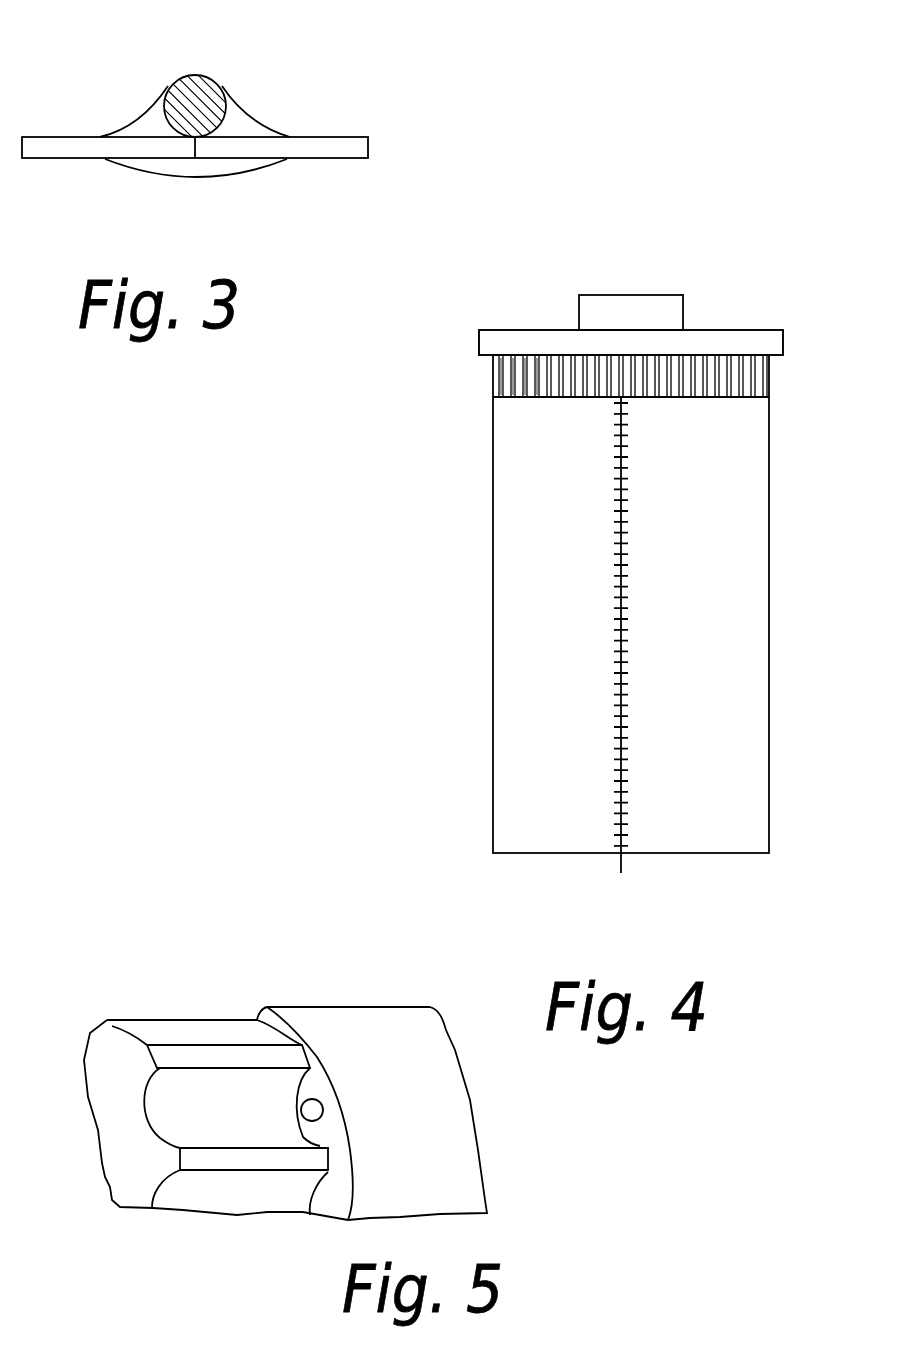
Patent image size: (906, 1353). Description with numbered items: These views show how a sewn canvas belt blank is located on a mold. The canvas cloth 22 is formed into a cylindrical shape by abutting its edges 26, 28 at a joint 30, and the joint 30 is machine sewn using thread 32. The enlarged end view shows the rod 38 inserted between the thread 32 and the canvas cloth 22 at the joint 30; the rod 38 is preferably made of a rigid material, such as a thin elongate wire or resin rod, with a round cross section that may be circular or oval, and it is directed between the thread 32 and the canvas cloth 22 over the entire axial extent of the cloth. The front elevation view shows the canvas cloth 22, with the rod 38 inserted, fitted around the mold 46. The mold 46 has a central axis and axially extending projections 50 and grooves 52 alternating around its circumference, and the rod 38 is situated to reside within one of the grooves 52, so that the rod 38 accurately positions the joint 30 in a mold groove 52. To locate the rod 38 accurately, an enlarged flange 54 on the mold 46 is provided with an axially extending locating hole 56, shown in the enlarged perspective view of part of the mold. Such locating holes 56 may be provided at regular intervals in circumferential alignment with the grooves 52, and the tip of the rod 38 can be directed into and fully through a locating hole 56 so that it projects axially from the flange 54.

In FIG. 3, the canvas cloth 22 is at (353, 145).
In FIG. 4, the canvas cloth 22 is at (757, 534).
In FIG. 3, the edge 26 is at (150, 160).
In FIG. 3, the edge 28 is at (155, 156).
In FIG. 3, the joint 30 is at (213, 160).
In FIG. 4, the joint 30 is at (618, 855).
In FIG. 3, the thread 32 is at (140, 107).
In FIG. 4, the thread 32 is at (627, 457).
In FIG. 3, the rod 38 is at (200, 92).
In FIG. 4, the rod 38 is at (620, 329).
In FIG. 4, the mold 46 is at (684, 330).
In FIG. 5, the mold 46 is at (334, 1007).
In FIG. 4, the projections 50 is at (757, 380).
In FIG. 5, the projections 50 is at (215, 1053).
In FIG. 4, the grooves 52 is at (550, 367).
In FIG. 5, the grooves 52 is at (155, 1030).
In FIG. 4, the flange 54 is at (479, 342).
In FIG. 5, the flange 54 is at (405, 1043).
In FIG. 5, the locating hole 56 is at (322, 1098).